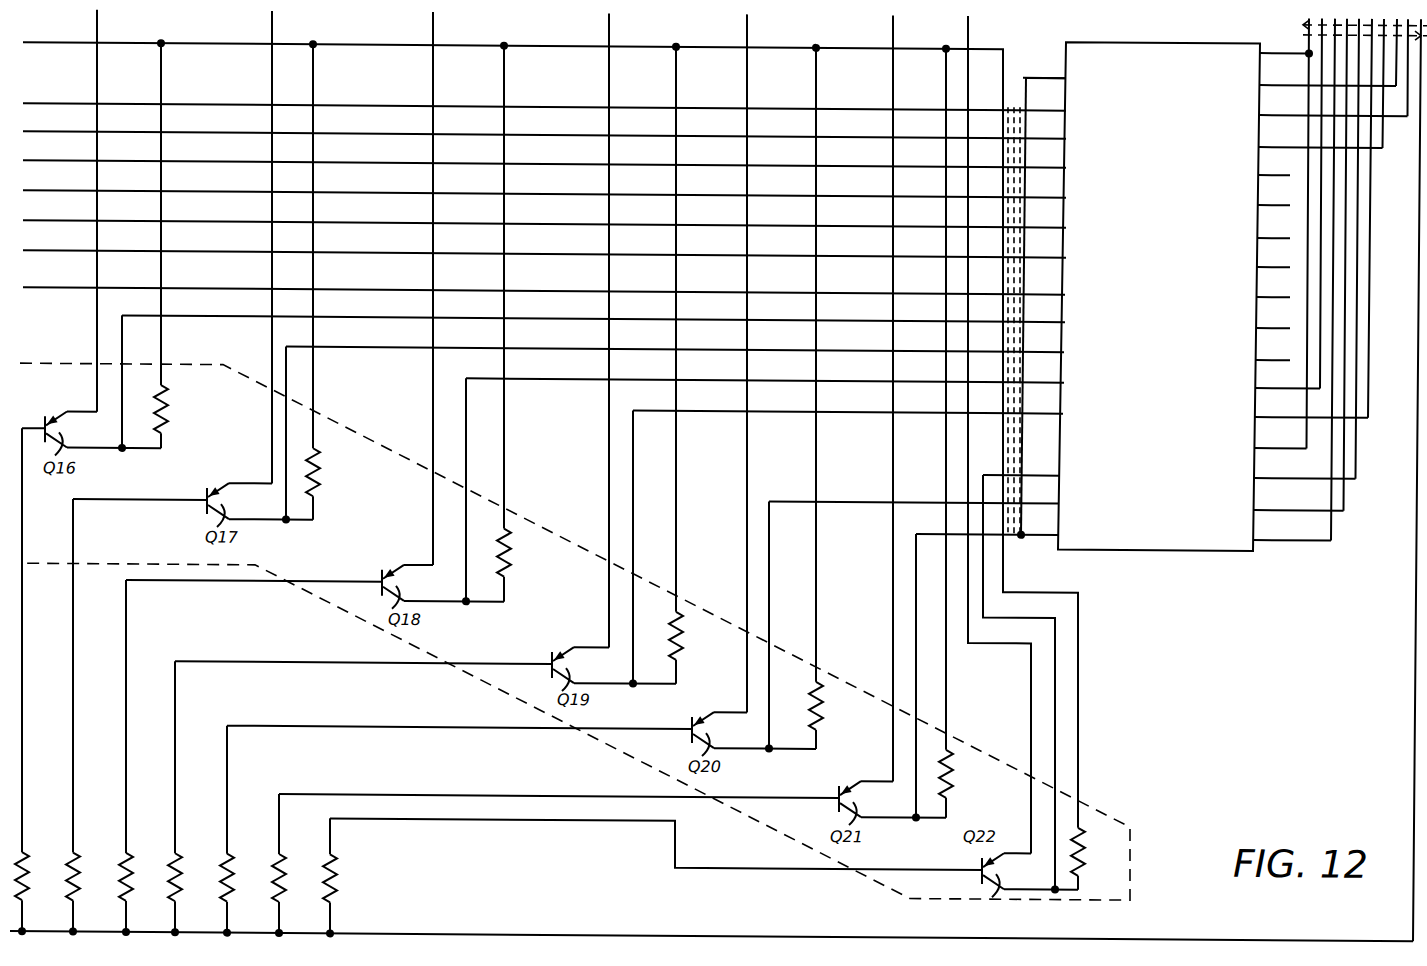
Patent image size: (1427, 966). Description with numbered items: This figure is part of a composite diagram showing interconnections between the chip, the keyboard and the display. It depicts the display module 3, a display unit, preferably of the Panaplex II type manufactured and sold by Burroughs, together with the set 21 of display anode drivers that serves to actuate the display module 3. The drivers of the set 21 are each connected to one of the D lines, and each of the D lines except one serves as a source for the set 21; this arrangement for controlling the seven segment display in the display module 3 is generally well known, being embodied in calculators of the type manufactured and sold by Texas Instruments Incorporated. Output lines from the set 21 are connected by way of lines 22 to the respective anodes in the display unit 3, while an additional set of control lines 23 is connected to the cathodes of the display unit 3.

The Z5 module 3 is at (1137, 12).
The set of display anode drivers 21 is at (1130, 880).
The lines 22 is at (1012, 98).
The set of control lines 23 is at (1298, 23).